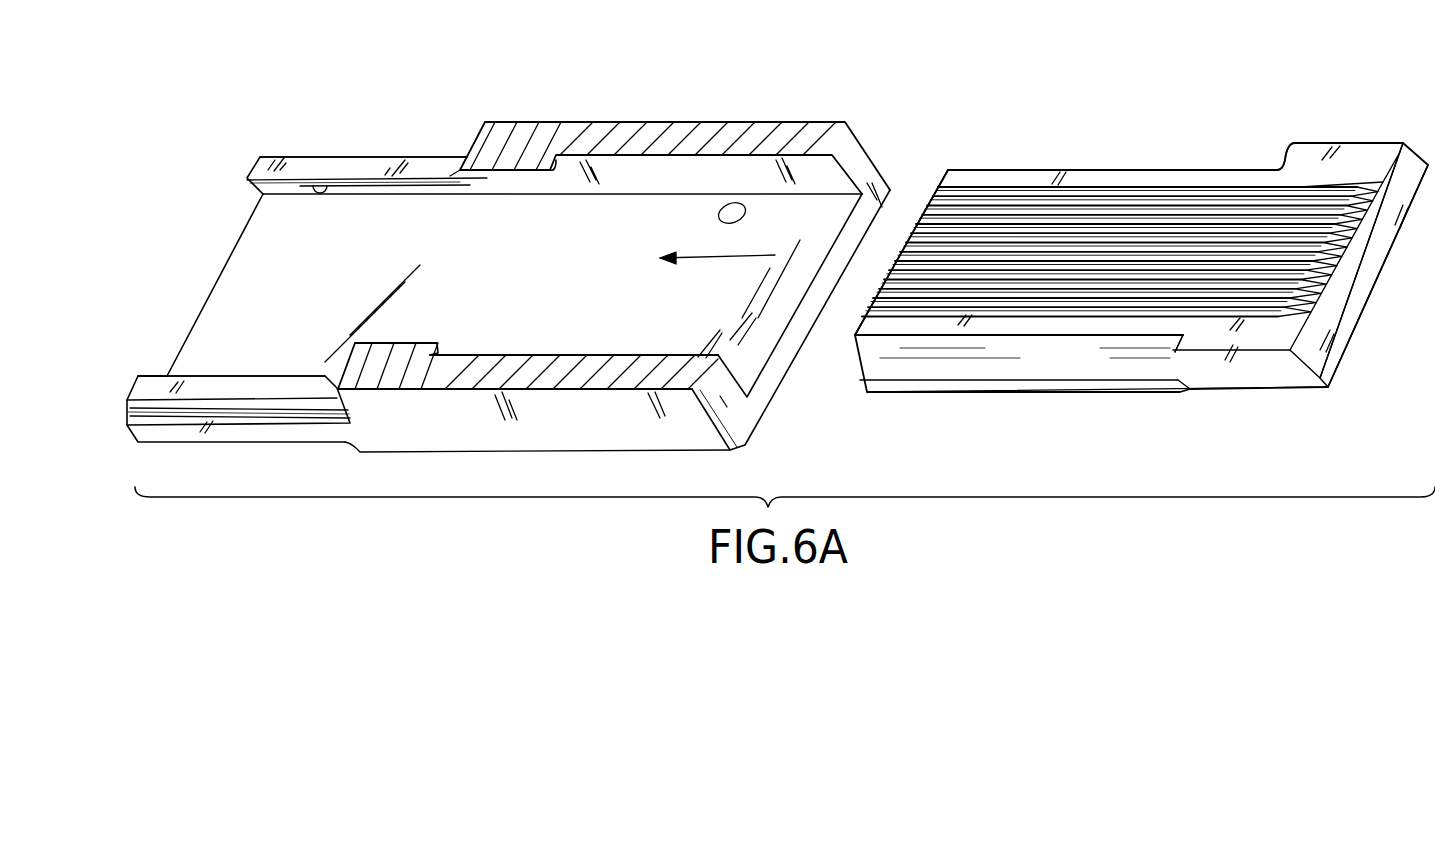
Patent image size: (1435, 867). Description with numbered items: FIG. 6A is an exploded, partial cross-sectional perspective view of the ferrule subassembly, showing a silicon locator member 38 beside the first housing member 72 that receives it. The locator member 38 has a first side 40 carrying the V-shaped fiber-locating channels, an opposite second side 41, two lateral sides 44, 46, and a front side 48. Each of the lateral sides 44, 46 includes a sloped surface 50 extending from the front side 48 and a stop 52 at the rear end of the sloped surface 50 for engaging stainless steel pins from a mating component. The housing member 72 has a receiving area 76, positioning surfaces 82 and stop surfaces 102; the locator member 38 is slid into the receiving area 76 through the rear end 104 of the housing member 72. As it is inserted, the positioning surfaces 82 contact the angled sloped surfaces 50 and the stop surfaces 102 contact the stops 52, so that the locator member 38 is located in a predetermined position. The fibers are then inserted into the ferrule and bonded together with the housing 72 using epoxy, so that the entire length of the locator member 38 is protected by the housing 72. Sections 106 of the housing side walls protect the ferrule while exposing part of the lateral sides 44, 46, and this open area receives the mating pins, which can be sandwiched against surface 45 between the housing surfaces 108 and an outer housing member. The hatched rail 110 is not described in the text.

The locator member 38 is at (1253, 396).
The first side 40 is at (1340, 150).
The second side 41 is at (1362, 346).
The lateral side 44 is at (1137, 170).
The surface 45 is at (1035, 170).
The lateral side 46 is at (1098, 392).
The front side 48 is at (850, 342).
The sloped surface 50 is at (1080, 170).
The stop 52 is at (1290, 152).
The housing member 72 is at (614, 116).
The receiving area 76 is at (534, 268).
The positioning surface 82 is at (320, 180).
The stop surface 102 is at (552, 158).
The rear end 104 is at (865, 166).
The section of side wall 106 is at (358, 157).
The surface 108 is at (417, 157).
The front rail 110 is at (570, 358).